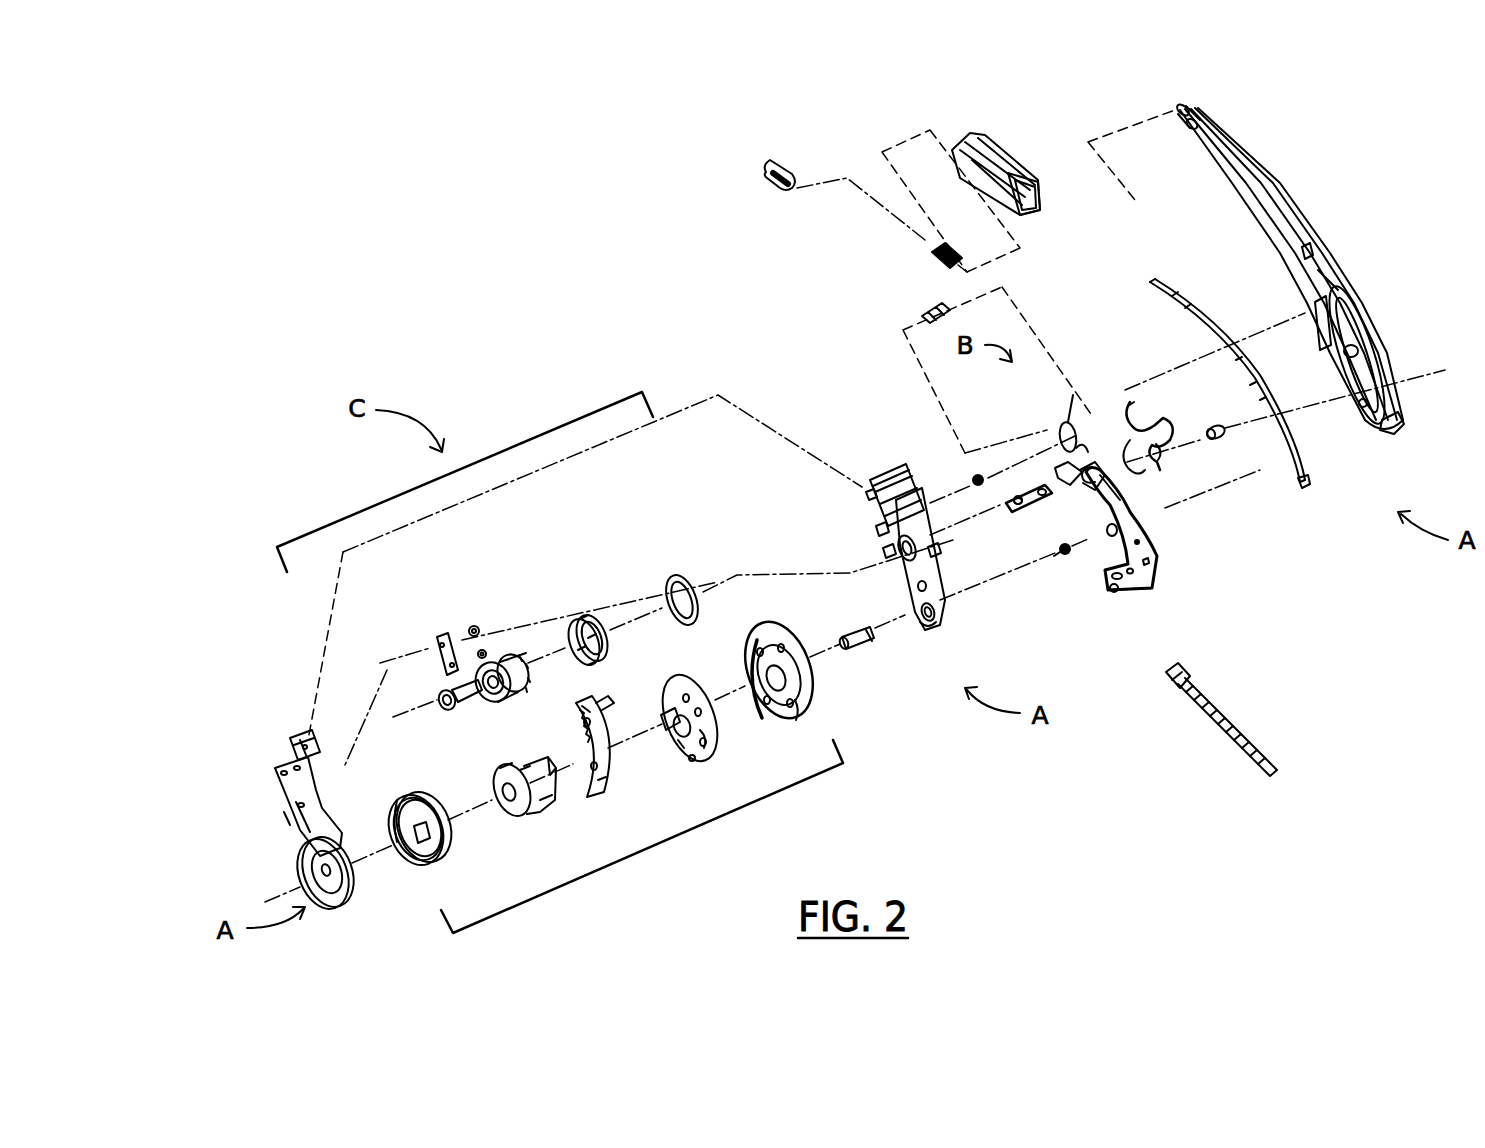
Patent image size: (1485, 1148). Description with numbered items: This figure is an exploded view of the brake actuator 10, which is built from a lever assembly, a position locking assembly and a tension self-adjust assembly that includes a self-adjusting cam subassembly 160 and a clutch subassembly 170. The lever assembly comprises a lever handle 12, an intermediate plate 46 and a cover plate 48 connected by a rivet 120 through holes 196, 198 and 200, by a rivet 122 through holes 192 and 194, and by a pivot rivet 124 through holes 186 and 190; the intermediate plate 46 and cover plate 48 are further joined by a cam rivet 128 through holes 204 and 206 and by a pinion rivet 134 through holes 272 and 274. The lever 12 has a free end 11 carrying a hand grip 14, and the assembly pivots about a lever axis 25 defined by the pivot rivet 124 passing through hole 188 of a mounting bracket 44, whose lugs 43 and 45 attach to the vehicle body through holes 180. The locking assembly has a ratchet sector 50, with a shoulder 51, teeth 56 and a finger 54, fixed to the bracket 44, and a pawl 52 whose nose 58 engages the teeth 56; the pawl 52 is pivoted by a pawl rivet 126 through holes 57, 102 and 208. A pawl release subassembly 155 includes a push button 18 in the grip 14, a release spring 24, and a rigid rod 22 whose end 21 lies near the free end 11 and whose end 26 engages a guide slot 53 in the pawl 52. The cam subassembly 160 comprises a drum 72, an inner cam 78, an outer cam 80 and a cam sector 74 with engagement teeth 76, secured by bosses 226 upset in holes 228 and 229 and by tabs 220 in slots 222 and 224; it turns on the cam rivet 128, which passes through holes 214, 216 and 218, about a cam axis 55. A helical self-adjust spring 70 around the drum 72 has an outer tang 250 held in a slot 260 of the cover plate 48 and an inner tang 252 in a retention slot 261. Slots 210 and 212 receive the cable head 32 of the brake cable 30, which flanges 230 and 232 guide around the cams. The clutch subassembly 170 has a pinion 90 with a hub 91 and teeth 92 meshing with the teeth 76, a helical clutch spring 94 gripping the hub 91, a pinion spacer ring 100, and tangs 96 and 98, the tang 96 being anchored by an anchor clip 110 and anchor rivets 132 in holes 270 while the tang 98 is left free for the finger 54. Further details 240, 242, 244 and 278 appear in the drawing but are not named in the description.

The actuator 10 is at (465, 286).
The free end 11 is at (1185, 111).
The lever handle 12 is at (1293, 195).
The hand grip 14 is at (1010, 158).
The push button 18 is at (773, 188).
The rod end 21 is at (1152, 283).
The rod 22 is at (1289, 434).
The release spring 24 is at (935, 258).
The lever axis 25 is at (1422, 378).
The rod end 26 is at (1316, 490).
The brake cable 30 is at (1220, 726).
The cable head 32 is at (1173, 684).
The lug 43 is at (1040, 477).
The mounting bracket 44 is at (1152, 542).
The lug 45 is at (1140, 590).
The intermediate plate 46 is at (872, 478).
The cover plate 48 is at (333, 905).
The ratchet sector 50 is at (1162, 452).
The shoulder 51 is at (1130, 447).
The pawl 52 is at (1070, 427).
The guide slot 53 is at (1068, 425).
The finger 54 is at (1130, 414).
The cam axis 55 is at (889, 636).
The teeth 56 is at (1157, 422).
The pawl pivot 57 is at (1067, 445).
The nose 58 is at (1093, 438).
The helical self-adjust spring 70 is at (432, 872).
The drum 72 is at (522, 830).
The cam sector 74 is at (597, 823).
The engagement teeth 76 is at (598, 788).
The inner cam 78 is at (698, 775).
The outer cam 80 is at (800, 725).
The pinion 90 is at (507, 700).
The hub 91 is at (497, 665).
The teeth 92 is at (522, 680).
The helical clutch spring 94 is at (582, 618).
The tang 96 is at (564, 640).
The tang 98 is at (565, 646).
The pinion spacer ring 100 is at (680, 576).
The hole 102 is at (1320, 342).
The anchor clip 110 is at (435, 628).
The rivet 120 is at (920, 315).
The rivet 122 is at (1224, 438).
The pivot rivet 124 is at (1067, 555).
The pawl rivet 126 is at (975, 475).
The cam rivet 128 is at (868, 650).
The anchor rivets 132 is at (472, 626).
The pinion rivet 134 is at (445, 690).
The pawl release subassembly 155 is at (845, 139).
The self-adjusting cam subassembly 160 is at (652, 873).
The clutch subassembly 170 is at (499, 559).
The holes 180 is at (1060, 457).
The hole 186 is at (1378, 432).
The hole 188 is at (1106, 528).
The hole 190 is at (948, 615).
The hole 192 is at (1373, 318).
The hole 194 is at (935, 548).
The hole 196 is at (1348, 280).
The hole 198 is at (862, 495).
The hole 200 is at (296, 736).
The hole 204 is at (922, 622).
The hole 206 is at (308, 868).
The hole 208 is at (870, 512).
The slot 210 is at (690, 760).
The slot 212 is at (790, 712).
The hole 214 is at (503, 816).
The hole 216 is at (680, 745).
The hole 218 is at (778, 702).
The tabs 220 is at (530, 760).
The slot 222 is at (694, 688).
The slot 224 is at (783, 650).
The bosses 226 is at (754, 650).
The holes 228 is at (676, 675).
The holes 229 is at (599, 699).
The flange 230 is at (705, 750).
The flange 232 is at (822, 652).
The stub shaft 240 is at (672, 684).
The pawl pivot 242 is at (578, 707).
The rim 244 is at (803, 708).
The outer tang 250 is at (414, 855).
The inner tang 252 is at (412, 792).
The slot 260 is at (334, 840).
The retention slot 261 is at (510, 760).
The holes 270 is at (290, 792).
The hole 272 is at (295, 828).
The hole 274 is at (919, 588).
The boss 278 is at (875, 528).